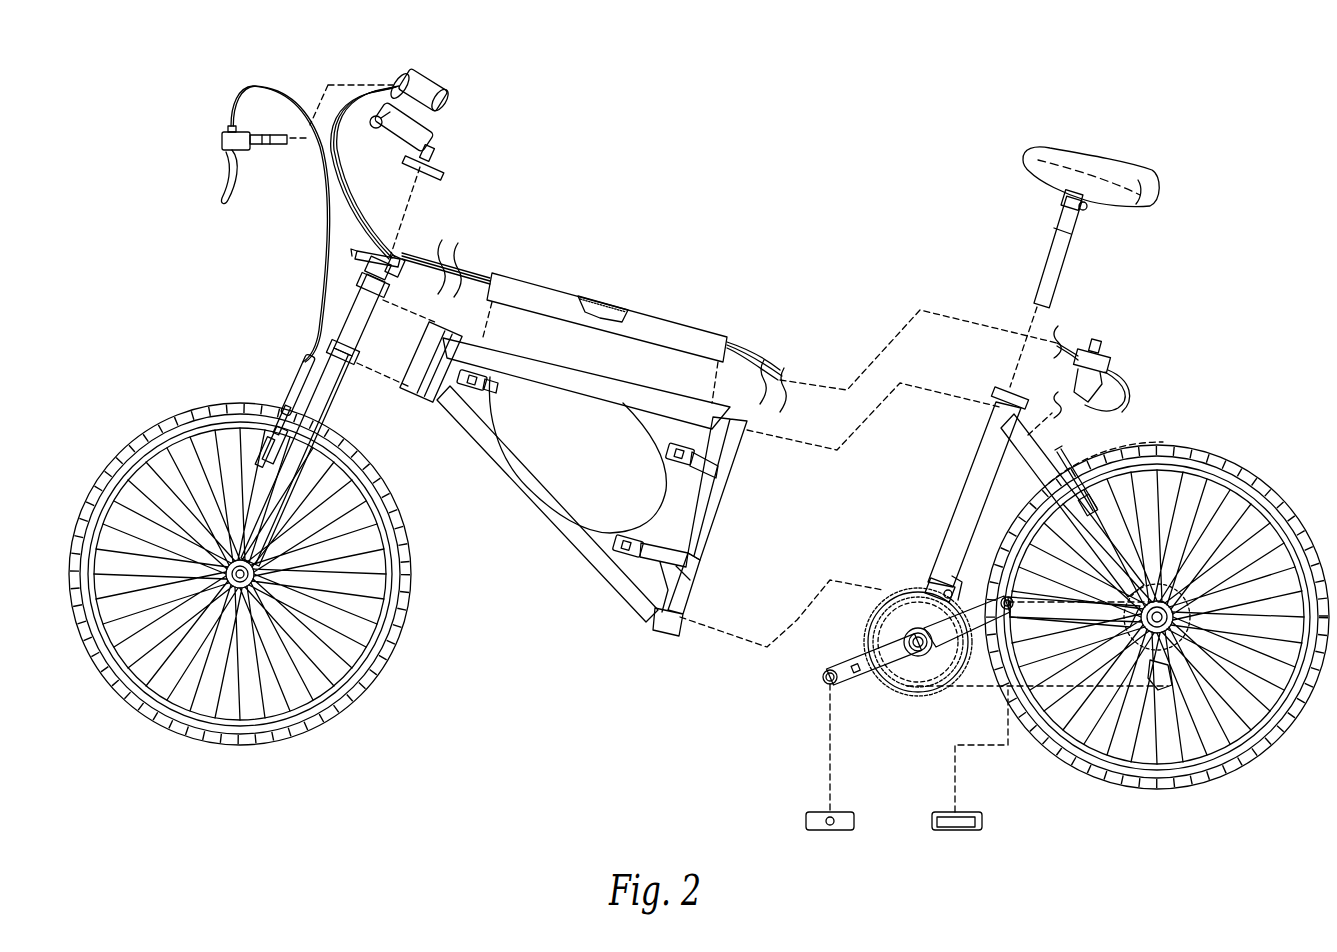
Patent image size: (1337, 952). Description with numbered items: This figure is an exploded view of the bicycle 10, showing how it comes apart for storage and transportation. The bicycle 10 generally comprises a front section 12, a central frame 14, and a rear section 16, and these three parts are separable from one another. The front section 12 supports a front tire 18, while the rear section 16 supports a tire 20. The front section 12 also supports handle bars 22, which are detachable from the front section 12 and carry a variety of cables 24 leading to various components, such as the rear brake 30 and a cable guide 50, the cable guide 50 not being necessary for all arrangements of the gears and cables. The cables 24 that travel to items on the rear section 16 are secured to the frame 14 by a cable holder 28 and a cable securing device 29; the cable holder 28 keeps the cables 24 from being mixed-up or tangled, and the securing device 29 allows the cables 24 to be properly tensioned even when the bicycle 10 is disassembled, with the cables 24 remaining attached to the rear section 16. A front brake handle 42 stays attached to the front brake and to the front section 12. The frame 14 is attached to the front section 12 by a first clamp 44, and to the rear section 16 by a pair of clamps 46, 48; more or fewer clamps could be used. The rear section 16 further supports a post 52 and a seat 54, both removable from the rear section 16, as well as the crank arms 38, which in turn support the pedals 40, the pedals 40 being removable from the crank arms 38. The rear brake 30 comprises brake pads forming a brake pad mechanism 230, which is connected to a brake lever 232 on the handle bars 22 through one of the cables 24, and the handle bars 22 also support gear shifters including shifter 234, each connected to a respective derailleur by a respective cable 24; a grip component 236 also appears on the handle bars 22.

The bicycle 10 is at (748, 150).
The front section 12 is at (335, 403).
The central frame 14 is at (565, 520).
The rear section 16 is at (970, 490).
The front tire 18 is at (137, 432).
The tire 20 is at (1238, 460).
The handle bars 22 is at (445, 160).
The cables 24 is at (348, 110).
The cable holder 28 is at (543, 295).
The cable securing device 29 is at (1100, 343).
The rear brake 30 is at (1128, 492).
The crank arms 38 is at (923, 676).
The pedals 40 is at (840, 830).
The front brake handle 42 is at (216, 178).
The first clamp 44 is at (437, 357).
The clamp 46 is at (722, 470).
The clamp 48 is at (680, 575).
The cable guide 50 is at (958, 580).
The post 52 is at (1047, 245).
The seat 54 is at (1085, 152).
The brake pad mechanism 230 is at (1118, 447).
The brake lever 232 is at (376, 128).
The gear shifter 234 is at (428, 82).
The grip end ring 236 is at (402, 72).